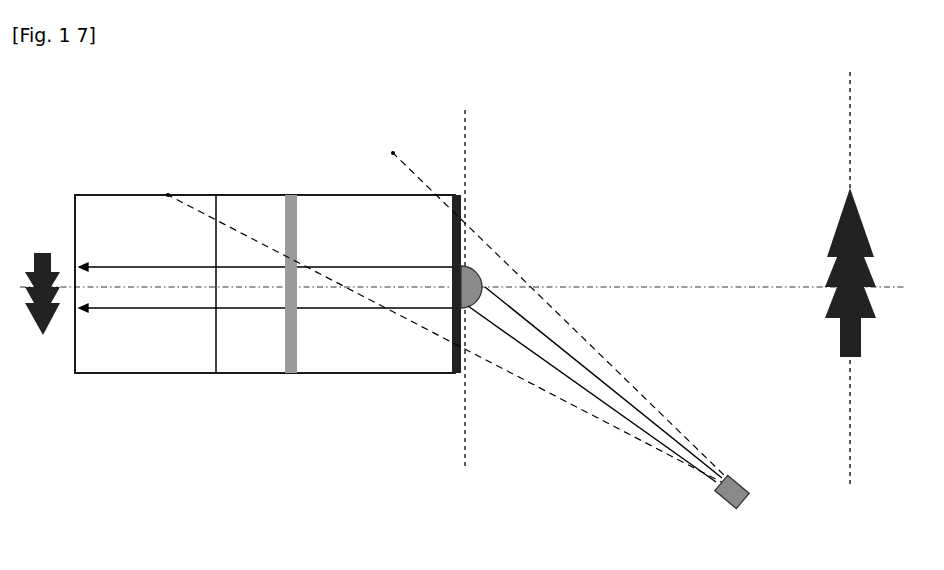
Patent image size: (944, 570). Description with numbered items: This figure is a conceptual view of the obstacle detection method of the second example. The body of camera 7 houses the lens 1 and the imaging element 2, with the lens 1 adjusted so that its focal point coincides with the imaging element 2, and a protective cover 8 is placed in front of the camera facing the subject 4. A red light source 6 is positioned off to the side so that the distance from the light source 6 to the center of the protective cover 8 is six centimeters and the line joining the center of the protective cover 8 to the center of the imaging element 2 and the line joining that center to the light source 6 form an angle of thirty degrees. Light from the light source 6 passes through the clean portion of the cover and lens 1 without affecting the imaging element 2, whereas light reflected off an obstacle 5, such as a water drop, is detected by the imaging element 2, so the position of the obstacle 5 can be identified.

The lens 1 is at (284, 353).
The imaging element 2 is at (75, 326).
The subject 4 is at (862, 360).
The obstacle 5 is at (480, 272).
The light source 6 is at (717, 498).
The body of camera 7 is at (128, 221).
The protective cover 8 is at (464, 196).